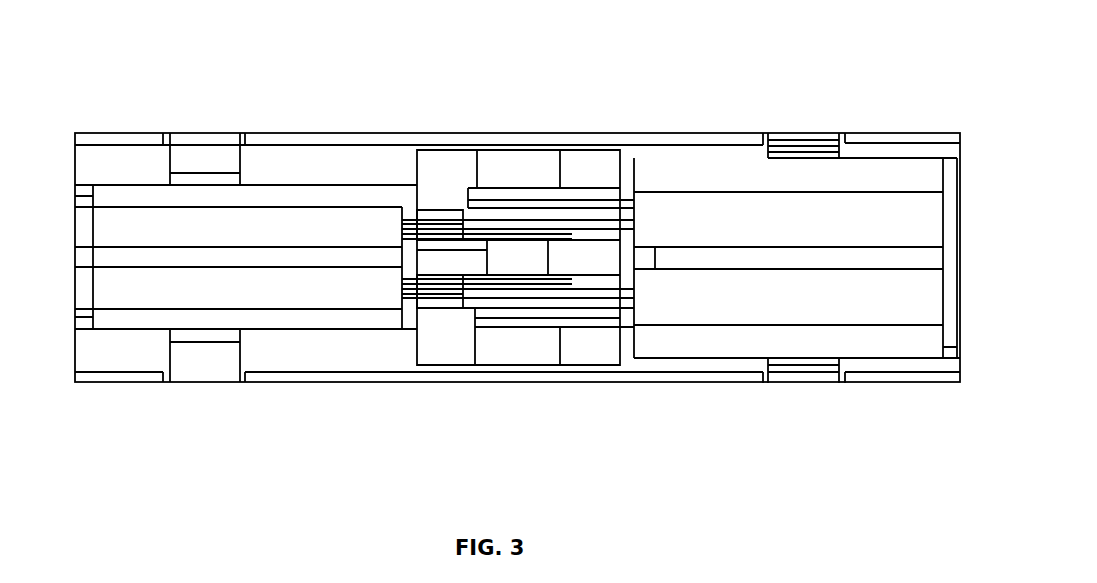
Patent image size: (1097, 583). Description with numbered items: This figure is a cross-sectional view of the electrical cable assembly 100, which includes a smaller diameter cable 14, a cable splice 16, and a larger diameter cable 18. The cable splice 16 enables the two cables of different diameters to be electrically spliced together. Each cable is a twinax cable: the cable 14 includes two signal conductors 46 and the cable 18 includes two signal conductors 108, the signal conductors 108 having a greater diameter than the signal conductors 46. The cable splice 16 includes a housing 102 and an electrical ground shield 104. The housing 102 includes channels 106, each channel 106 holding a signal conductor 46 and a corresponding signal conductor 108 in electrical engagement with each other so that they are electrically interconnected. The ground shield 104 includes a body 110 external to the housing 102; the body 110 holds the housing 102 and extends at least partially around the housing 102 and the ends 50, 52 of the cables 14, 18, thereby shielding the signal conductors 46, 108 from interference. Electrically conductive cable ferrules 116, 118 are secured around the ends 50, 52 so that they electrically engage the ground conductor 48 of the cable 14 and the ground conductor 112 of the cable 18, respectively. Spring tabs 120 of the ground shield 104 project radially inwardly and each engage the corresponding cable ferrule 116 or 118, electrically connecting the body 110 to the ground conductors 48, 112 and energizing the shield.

The electrical cable assembly 100 is at (521, 37).
The cable splice 16 is at (627, 49).
The cable 14 is at (97, 188).
The cable 18 is at (955, 159).
The signal conductors 46 is at (413, 212).
The electrical ground conductor 48 is at (85, 285).
The end 50 is at (76, 325).
The end 52 is at (917, 149).
The housing 102 is at (524, 165).
The electrical ground shield 104 is at (868, 382).
The channel 106 is at (497, 213).
The signal conductors 108 is at (578, 202).
The body 110 is at (692, 392).
The electrical ground conductor 112 is at (920, 262).
The cable ferrule 116 is at (301, 192).
The cable ferrule 118 is at (775, 333).
The spring tabs 120 is at (210, 150).